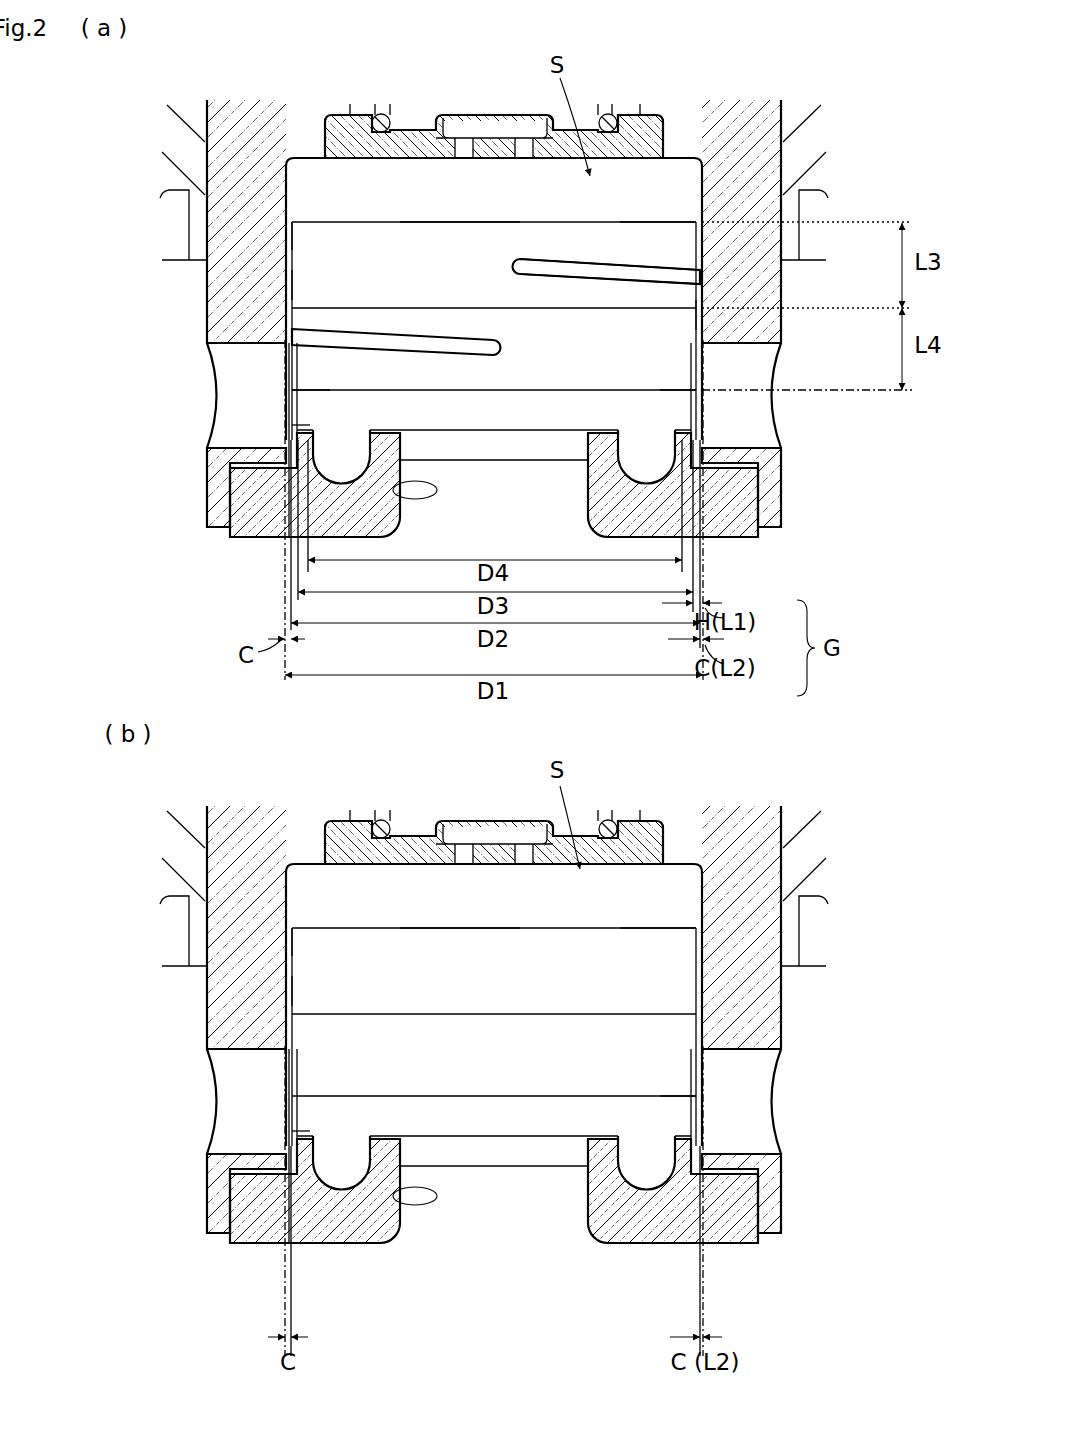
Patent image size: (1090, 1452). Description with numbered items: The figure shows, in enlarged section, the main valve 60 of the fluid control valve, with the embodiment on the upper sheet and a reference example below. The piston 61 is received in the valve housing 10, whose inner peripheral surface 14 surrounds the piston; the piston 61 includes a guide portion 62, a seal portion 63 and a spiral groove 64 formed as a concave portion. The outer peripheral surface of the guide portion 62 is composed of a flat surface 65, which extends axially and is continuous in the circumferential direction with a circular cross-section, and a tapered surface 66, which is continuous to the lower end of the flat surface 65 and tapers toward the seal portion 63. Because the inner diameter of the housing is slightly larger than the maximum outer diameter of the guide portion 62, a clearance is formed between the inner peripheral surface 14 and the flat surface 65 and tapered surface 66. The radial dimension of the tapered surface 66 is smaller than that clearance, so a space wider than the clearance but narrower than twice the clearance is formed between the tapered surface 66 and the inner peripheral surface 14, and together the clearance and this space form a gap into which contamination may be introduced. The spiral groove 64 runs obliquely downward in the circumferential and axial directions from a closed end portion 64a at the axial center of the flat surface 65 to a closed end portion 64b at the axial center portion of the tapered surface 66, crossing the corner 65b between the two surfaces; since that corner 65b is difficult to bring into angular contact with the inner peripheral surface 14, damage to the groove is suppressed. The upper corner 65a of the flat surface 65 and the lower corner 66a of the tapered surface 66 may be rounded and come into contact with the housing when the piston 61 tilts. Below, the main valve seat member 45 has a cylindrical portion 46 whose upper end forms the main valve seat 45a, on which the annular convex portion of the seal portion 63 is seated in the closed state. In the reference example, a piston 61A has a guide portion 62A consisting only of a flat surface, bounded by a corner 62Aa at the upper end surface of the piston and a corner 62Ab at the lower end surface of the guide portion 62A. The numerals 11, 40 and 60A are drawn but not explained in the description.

In FIG. 2A, the valve housing 10 is at (262, 100).
In FIG. 2B, the valve housing 10 is at (494, 977).
In FIG. 2A, the base member 11 is at (296, 540).
In FIG. 2B, the base member 11 is at (266, 1183).
In FIG. 2A, the inner peripheral surface 14 is at (289, 262).
In FIG. 2B, the inner peripheral surface 14 is at (465, 936).
In FIG. 2A, the cap 40 is at (360, 114).
In FIG. 2B, the cap 40 is at (494, 804).
In FIG. 2A, the main valve seat member 45 is at (245, 542).
In FIG. 2B, the main valve seat member 45 is at (469, 1228).
In FIG. 2A, the main valve seat 45a is at (395, 490).
In FIG. 2B, the main valve seat 45a is at (265, 1190).
In FIG. 2A, the cylindrical portion 46 is at (340, 478).
In FIG. 2B, the cylindrical portion 46 is at (391, 1185).
In FIG. 2A, the main valve 60 is at (455, 193).
In FIG. 2B, the seal member 60A is at (454, 842).
In FIG. 2A, the piston 61 is at (666, 213).
In FIG. 2B, the piston 61A is at (685, 842).
In FIG. 2A, the guide portion 62 is at (286, 300).
In FIG. 2B, the guide portion 62A is at (379, 1015).
In FIG. 2B, the corner 62Aa is at (187, 934).
In FIG. 2B, the corner 62Ab is at (767, 1115).
In FIG. 2A, the seal portion 63 is at (292, 428).
In FIG. 2B, the seal portion 63 is at (185, 1147).
In FIG. 2A, the spiral groove 64 is at (702, 285).
In FIG. 2A, the end portion 64a is at (517, 263).
In FIG. 2A, the end portion 64b is at (500, 348).
In FIG. 2A, the flat surface 65 is at (290, 278).
In FIG. 2A, the corner 65a is at (300, 232).
In FIG. 2A, the corner 65b is at (702, 317).
In FIG. 2A, the tapered surface 66 is at (294, 394).
In FIG. 2A, the corner 66a is at (698, 400).